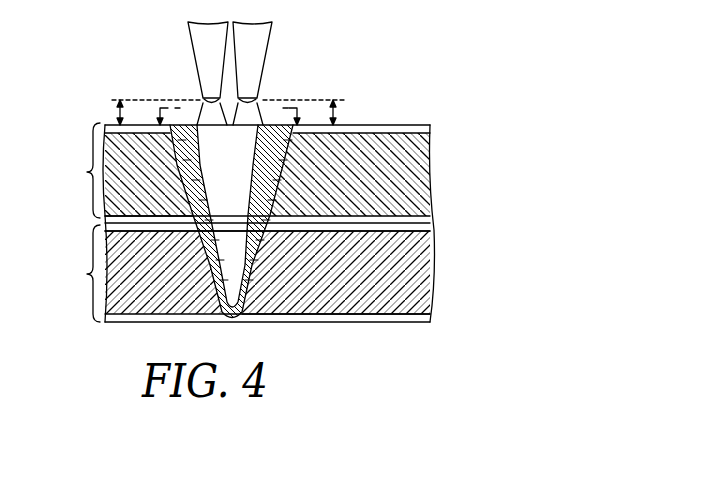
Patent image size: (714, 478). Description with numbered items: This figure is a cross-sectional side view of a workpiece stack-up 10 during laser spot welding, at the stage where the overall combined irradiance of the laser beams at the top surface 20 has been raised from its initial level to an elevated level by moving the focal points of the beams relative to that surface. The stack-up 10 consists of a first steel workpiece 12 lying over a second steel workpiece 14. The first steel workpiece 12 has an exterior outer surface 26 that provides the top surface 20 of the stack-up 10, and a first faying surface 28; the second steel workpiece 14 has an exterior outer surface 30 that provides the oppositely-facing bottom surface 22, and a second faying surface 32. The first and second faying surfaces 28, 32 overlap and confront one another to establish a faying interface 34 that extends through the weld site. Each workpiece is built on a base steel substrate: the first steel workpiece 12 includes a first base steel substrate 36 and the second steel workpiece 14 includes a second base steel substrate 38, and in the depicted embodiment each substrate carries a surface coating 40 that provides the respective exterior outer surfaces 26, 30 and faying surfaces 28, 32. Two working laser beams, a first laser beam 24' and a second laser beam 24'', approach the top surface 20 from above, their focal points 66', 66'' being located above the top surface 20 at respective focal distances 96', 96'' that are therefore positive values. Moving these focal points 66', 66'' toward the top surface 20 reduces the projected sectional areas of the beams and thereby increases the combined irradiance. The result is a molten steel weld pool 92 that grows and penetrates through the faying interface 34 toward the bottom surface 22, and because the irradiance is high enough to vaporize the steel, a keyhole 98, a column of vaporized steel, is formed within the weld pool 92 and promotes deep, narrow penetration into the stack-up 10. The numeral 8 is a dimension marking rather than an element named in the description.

The workpiece stack-up 10 is at (84, 219).
The first steel workpiece 12 is at (88, 172).
The second steel workpiece 14 is at (88, 273).
The top surface 20 is at (366, 125).
The bottom surface 22 is at (312, 322).
The exterior outer surface 26 is at (392, 125).
The first faying surface 28 is at (305, 232).
The exterior outer surface 30 is at (393, 322).
The second faying surface 32 is at (338, 216).
The faying interface 34 is at (178, 227).
The first base steel substrate 36 is at (410, 170).
The second base steel substrate 38 is at (403, 278).
The surface coating 40 is at (428, 128).
The molten steel weld pool 92 is at (195, 177).
The keyhole 98 is at (230, 182).
The second working laser beam 24'' is at (180, 54).
The first working laser beam 24' is at (284, 54).
The focal point 66'' is at (177, 92).
The focal point 66' is at (278, 92).
The focal distance 96'' is at (126, 101).
The focal distance 96' is at (320, 84).
The standoff dimension 8 is at (230, 115).